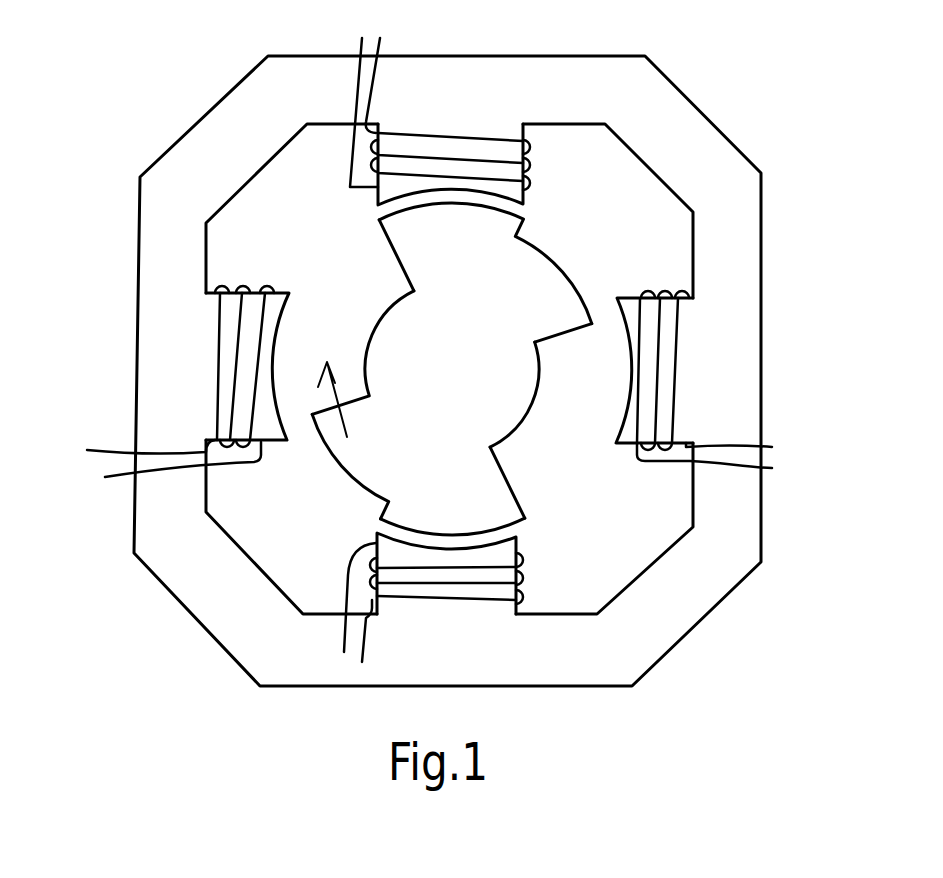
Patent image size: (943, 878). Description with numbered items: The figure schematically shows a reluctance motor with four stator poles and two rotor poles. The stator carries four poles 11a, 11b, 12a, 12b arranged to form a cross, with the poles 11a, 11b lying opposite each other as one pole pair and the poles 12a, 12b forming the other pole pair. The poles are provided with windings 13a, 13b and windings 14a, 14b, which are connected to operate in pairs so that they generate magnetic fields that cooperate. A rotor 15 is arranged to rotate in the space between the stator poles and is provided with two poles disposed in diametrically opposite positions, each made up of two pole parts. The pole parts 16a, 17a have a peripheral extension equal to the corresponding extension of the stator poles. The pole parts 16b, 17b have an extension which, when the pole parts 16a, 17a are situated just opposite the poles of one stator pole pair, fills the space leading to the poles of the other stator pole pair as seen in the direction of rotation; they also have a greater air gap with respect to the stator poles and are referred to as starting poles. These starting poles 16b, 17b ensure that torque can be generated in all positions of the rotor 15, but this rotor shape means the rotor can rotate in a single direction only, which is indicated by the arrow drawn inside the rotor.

The stator pole 11a is at (272, 310).
The stator pole 11b is at (628, 301).
The stator pole 12a is at (521, 575).
The stator pole 12b is at (524, 201).
The winding 13a is at (217, 358).
The winding 13b is at (678, 366).
The winding 14a is at (472, 600).
The winding 14b is at (473, 137).
The rotor 15 is at (508, 398).
The rotor pole part 16a is at (490, 493).
The starting pole 16b is at (367, 465).
The rotor pole part 17a is at (412, 247).
The starting pole 17b is at (558, 317).